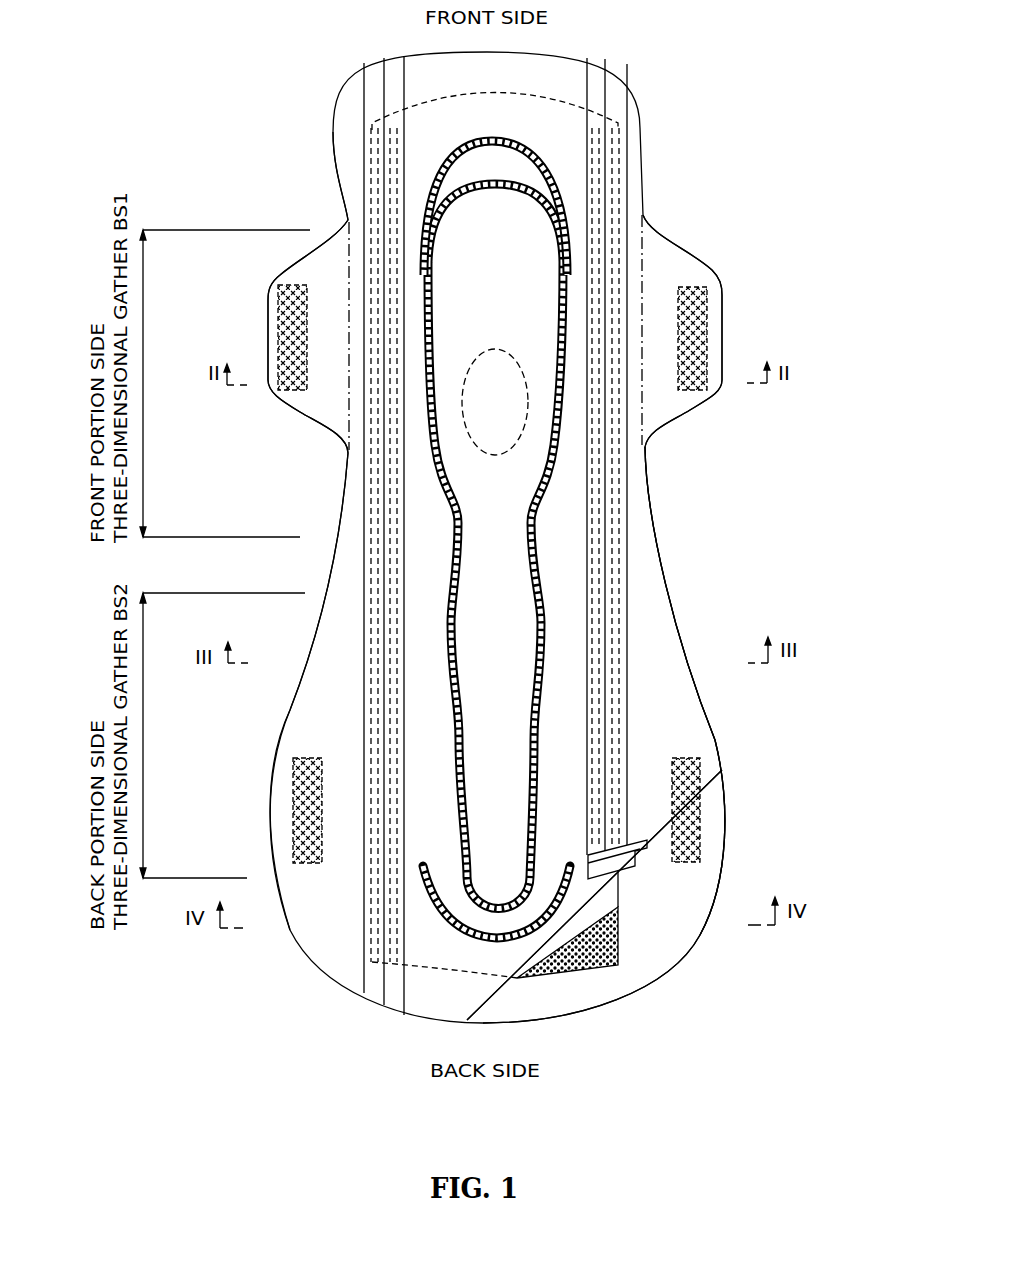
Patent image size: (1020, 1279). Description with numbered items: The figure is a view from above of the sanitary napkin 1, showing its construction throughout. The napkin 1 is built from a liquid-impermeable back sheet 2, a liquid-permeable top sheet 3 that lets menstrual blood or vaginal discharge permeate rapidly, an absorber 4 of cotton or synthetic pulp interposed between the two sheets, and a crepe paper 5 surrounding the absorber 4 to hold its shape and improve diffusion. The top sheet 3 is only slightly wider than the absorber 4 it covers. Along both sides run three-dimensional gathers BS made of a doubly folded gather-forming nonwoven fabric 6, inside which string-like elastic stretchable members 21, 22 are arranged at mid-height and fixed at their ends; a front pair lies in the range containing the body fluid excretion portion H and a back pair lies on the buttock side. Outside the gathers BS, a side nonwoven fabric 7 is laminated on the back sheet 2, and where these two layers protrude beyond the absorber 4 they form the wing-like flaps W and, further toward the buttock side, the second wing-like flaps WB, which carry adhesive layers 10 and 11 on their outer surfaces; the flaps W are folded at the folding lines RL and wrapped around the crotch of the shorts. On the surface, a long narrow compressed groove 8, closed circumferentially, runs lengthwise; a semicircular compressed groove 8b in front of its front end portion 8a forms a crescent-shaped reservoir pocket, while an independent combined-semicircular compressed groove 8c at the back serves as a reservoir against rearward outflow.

The sanitary napkin 1 is at (335, 110).
The liquid-impermeable back sheet 2 is at (653, 957).
The liquid-permeable top sheet 3 is at (443, 962).
The absorber 4 is at (568, 962).
The crepe paper 5 is at (510, 972).
The three-dimensional gather-forming nonwoven fabric 6 is at (605, 865).
The side nonwoven fabric 7 is at (335, 415).
The compressed groove 8 is at (513, 584).
The front end portion of the compressed groove 8a is at (497, 188).
The semicircular compressed groove 8b is at (533, 150).
The combined-semicircular compressed groove 8c is at (428, 893).
The adhesive layer 10 is at (273, 368).
The adhesive layer 11 is at (293, 807).
The string-like elastic stretchable member 21 is at (357, 747).
The string-like elastic stretchable member 22 is at (398, 775).
The wing-like flap W is at (262, 307).
The second wing-like flap WB is at (745, 697).
The body fluid excretion portion H is at (495, 348).
The folding line RL is at (348, 347).
The three-dimensional gather BS is at (486, 535).